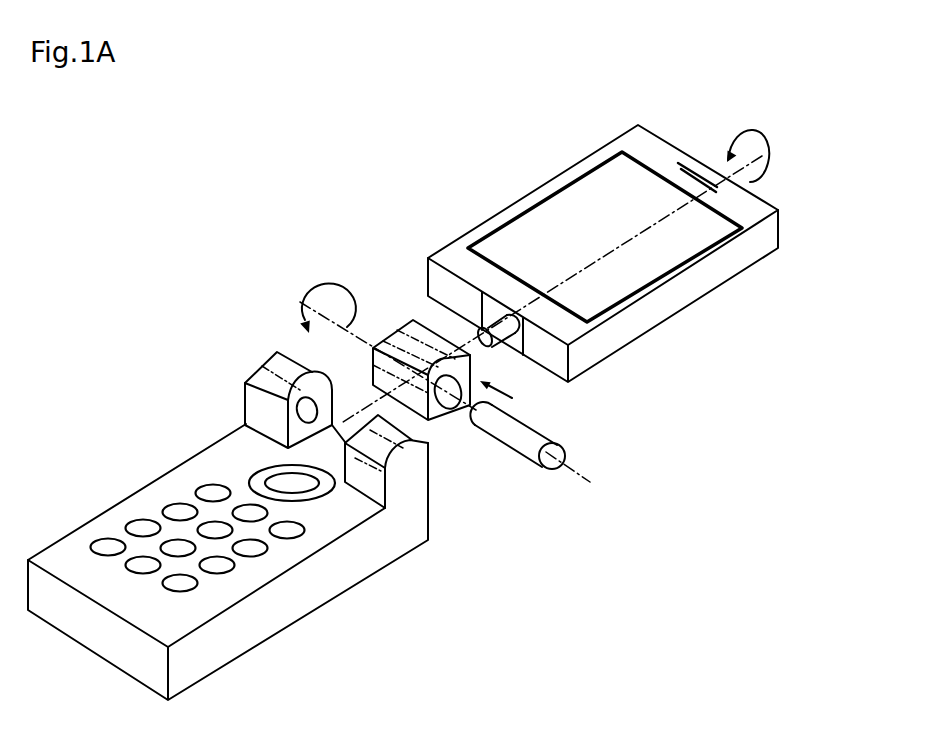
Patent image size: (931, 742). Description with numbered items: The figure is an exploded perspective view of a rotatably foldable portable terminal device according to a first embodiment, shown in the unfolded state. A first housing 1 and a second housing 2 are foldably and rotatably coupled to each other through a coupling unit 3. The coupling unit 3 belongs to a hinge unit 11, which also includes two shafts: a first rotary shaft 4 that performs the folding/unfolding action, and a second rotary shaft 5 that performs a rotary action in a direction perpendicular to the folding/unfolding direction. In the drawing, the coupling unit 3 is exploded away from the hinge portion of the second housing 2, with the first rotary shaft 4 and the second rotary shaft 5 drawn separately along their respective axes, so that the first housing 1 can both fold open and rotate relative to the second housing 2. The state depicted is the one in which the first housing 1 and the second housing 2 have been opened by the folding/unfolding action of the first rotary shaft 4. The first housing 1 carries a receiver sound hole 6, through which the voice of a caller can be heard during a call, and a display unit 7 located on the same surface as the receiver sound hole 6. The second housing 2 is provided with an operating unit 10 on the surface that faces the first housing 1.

The first housing 1 is at (577, 232).
The second housing 2 is at (228, 526).
The coupling unit 3 is at (443, 423).
The first rotary shaft 4 is at (548, 451).
The second rotary shaft 5 is at (495, 348).
The receiver sound hole 6 is at (668, 164).
The display unit 7 is at (533, 255).
The operating unit 10 is at (213, 562).
The hinge unit 11 is at (546, 446).